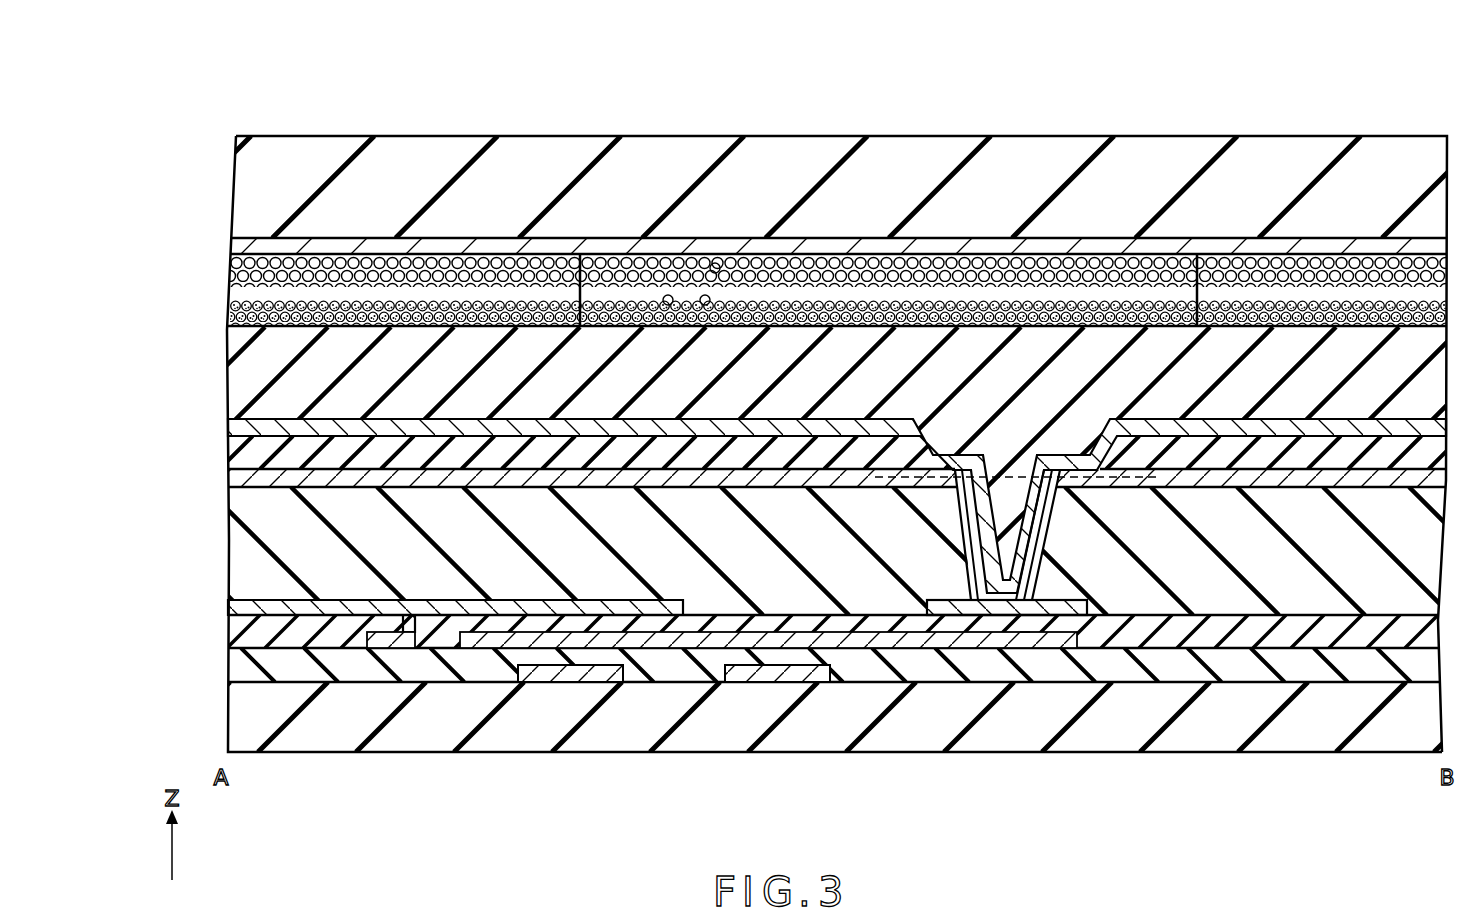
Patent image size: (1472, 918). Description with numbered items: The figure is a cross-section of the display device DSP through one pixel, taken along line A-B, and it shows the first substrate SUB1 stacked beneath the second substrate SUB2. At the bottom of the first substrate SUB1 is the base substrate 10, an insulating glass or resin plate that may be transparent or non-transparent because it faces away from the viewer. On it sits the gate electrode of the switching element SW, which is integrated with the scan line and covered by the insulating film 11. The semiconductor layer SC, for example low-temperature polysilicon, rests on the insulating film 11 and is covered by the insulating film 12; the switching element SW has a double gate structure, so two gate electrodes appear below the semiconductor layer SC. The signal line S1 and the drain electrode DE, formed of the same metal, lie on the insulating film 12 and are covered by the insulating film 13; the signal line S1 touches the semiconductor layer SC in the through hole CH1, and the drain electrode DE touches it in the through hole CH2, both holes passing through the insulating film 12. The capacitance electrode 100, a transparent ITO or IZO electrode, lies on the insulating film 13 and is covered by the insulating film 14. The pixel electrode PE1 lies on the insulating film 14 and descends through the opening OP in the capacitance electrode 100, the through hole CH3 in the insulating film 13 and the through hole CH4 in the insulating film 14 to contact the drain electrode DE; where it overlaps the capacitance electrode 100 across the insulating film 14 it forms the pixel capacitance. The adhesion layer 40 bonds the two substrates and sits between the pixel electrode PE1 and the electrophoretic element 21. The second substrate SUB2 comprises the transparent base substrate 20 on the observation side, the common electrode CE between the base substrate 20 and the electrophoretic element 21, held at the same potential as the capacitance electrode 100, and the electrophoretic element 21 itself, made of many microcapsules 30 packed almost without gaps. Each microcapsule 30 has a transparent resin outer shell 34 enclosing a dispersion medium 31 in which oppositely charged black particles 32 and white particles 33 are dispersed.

The display device DSP is at (1340, 98).
The first substrate SUB1 is at (186, 739).
The second substrate SUB2 is at (222, 237).
The base substrate 10 is at (240, 707).
The insulating film 11 is at (240, 660).
The insulating film 12 is at (240, 632).
The insulating film 13 is at (240, 537).
The insulating film 14 is at (240, 448).
The capacitance electrode 100 is at (240, 477).
The pixel electrode PE1 is at (240, 423).
The adhesion layer 40 is at (240, 373).
The base substrate 20 is at (240, 171).
The common electrode CE is at (240, 249).
The electrophoretic element 21 is at (232, 291).
The microcapsule 30 is at (579, 246).
The dispersion medium 31 is at (668, 296).
The black particles 32 is at (705, 296).
The white particles 33 is at (716, 263).
The outer shell 34 is at (1197, 256).
The opening OP is at (930, 490).
The signal line S1 is at (240, 604).
The drain electrode DE is at (1092, 603).
The semiconductor layer SC is at (1082, 644).
The switching element SW is at (600, 702).
The through hole CH1 is at (424, 624).
The through hole CH2 is at (1025, 632).
The through hole CH3 is at (1038, 565).
The through hole CH4 is at (1000, 592).